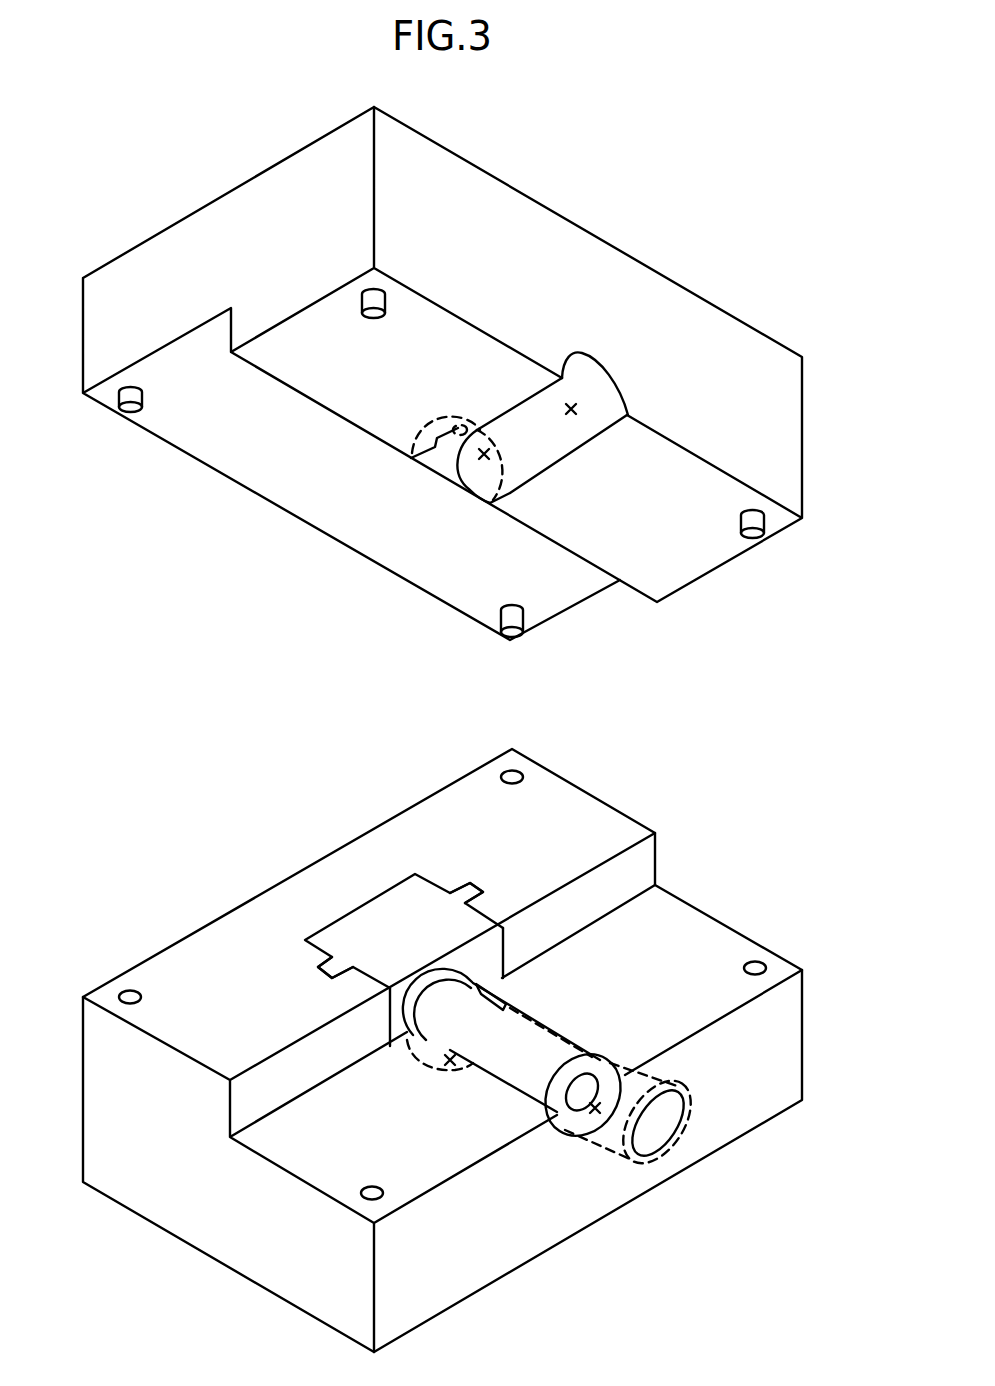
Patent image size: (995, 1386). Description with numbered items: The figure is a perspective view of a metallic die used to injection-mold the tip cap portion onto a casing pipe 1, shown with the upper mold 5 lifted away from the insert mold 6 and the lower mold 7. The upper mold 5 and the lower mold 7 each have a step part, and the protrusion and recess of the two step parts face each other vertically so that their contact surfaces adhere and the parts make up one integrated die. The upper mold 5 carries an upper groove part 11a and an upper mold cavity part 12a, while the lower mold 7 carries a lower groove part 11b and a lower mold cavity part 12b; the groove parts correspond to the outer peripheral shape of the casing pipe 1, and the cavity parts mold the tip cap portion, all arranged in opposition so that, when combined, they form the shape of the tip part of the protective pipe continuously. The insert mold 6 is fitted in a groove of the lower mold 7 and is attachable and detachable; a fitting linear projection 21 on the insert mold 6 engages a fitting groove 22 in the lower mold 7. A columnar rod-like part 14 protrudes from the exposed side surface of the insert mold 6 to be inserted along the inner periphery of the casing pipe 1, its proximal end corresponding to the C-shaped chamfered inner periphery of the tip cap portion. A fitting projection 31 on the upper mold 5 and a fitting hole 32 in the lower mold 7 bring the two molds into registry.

The casing pipe 1 is at (615, 1150).
The upper mold 5 is at (746, 280).
The insert mold 6 is at (377, 910).
The lower mold 7 is at (721, 888).
The upper groove part 11a is at (577, 410).
The lower groove part 11b is at (595, 1110).
The upper mold cavity part 12a is at (484, 458).
The lower mold cavity part 12b is at (451, 1065).
The rod-like part 14 is at (497, 1053).
The fitting linear projection 21 is at (337, 971).
The fitting groove 22 is at (332, 967).
The fitting projection 31 is at (128, 412).
The fitting hole 32 is at (128, 993).